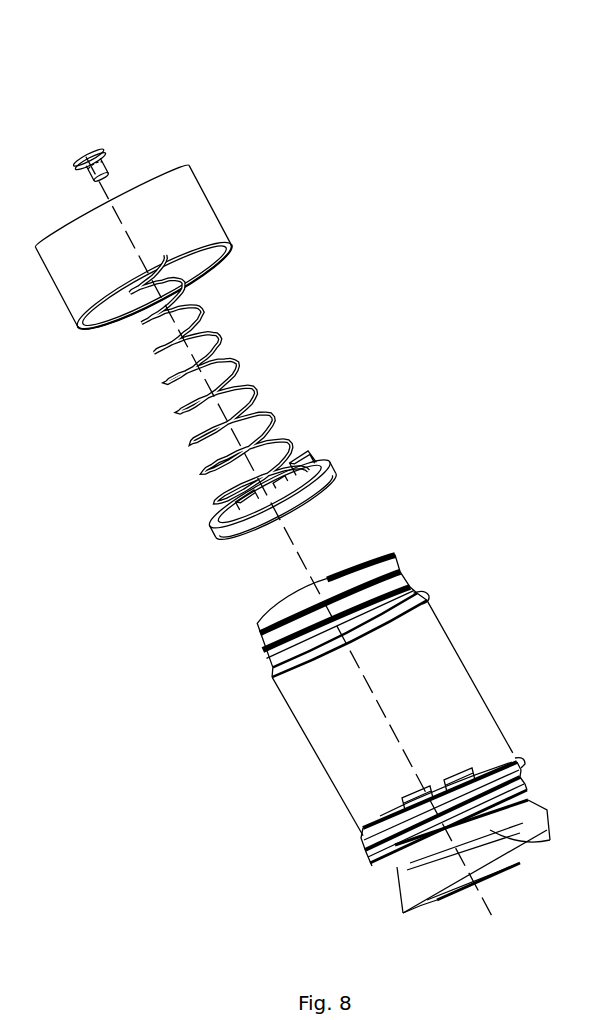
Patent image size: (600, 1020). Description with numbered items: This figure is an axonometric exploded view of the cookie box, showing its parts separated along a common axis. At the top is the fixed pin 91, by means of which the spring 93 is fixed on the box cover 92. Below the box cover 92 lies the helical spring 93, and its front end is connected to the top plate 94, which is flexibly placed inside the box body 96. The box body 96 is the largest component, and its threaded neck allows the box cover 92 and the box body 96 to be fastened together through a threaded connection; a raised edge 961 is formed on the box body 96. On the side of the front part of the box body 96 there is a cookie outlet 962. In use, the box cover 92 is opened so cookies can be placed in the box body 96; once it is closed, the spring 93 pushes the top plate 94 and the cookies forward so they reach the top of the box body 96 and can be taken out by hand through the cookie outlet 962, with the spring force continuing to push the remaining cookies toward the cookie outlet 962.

The fixed pin 91 is at (93, 167).
The box cover 92 is at (136, 250).
The spring 93 is at (205, 379).
The top plate 94 is at (271, 496).
The box body 96 is at (379, 686).
The raised edge 961 is at (444, 812).
The cookie outlet 962 is at (472, 856).